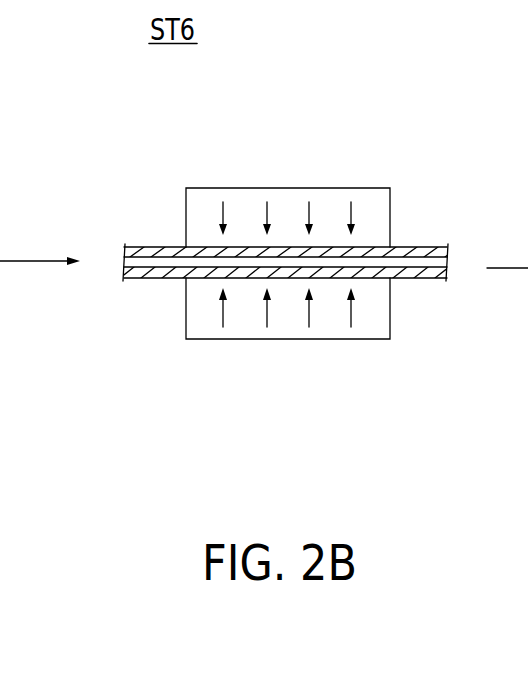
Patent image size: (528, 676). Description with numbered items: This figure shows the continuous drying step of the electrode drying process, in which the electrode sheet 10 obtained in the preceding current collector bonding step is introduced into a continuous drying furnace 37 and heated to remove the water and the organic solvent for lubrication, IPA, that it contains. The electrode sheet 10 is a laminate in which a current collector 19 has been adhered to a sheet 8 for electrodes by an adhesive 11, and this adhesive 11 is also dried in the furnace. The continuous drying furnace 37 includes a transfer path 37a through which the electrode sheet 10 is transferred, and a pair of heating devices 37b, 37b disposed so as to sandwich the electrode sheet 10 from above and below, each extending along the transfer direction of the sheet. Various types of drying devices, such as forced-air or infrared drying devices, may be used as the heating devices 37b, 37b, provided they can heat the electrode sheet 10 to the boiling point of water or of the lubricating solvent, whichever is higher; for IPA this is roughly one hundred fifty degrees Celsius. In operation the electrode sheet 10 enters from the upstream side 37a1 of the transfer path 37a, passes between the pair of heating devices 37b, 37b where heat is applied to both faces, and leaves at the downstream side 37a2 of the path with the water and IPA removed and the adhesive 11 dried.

The continuous drying furnace 37 is at (325, 177).
The transfer path 37a is at (177, 241).
The upstream side of the transfer path 37a1 is at (176, 288).
The outlet of passage 37a2 is at (400, 292).
The heating devices 37b is at (210, 187).
The electrode sheet 10 is at (127, 246).
The sheet for electrodes 8 is at (159, 278).
The adhesive 11 is at (410, 247).
The current collector 19 is at (433, 250).